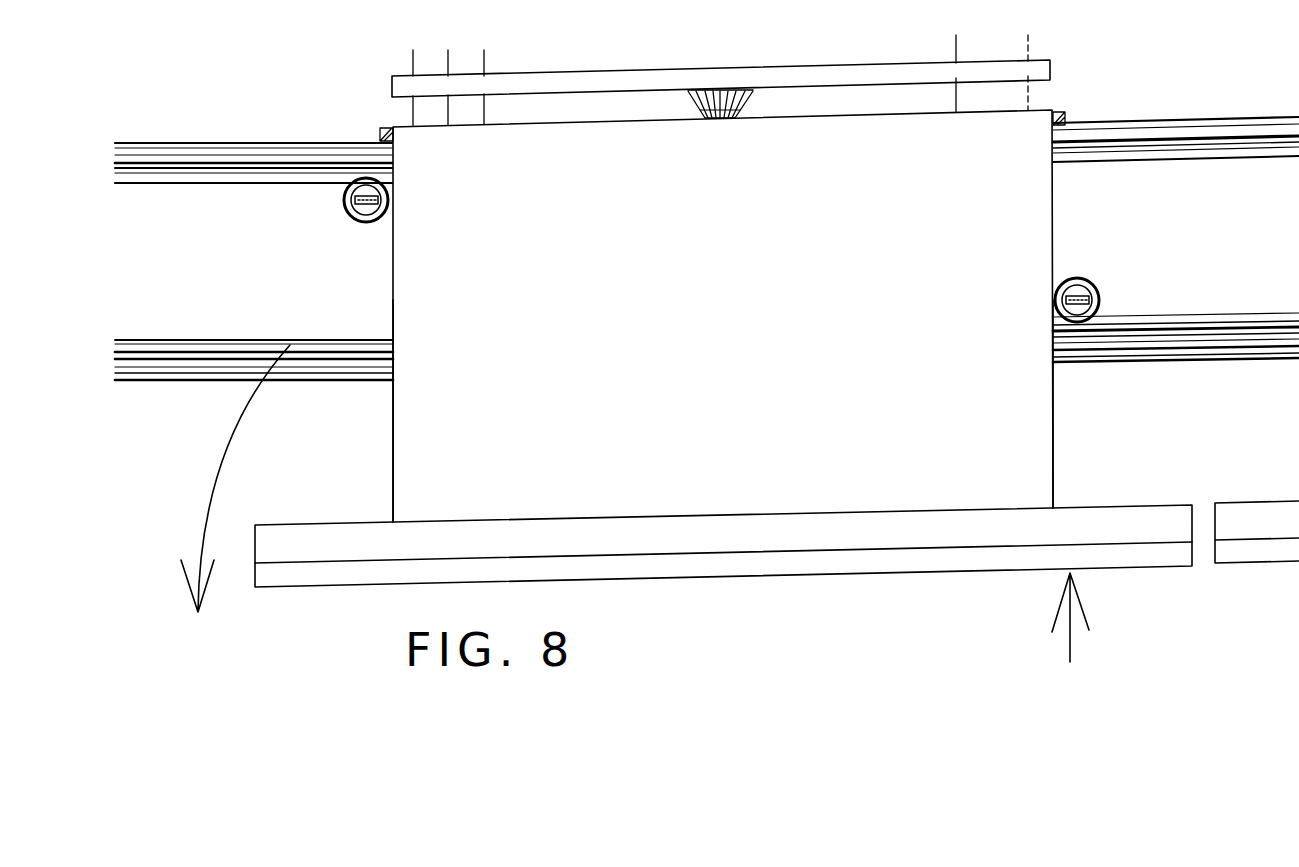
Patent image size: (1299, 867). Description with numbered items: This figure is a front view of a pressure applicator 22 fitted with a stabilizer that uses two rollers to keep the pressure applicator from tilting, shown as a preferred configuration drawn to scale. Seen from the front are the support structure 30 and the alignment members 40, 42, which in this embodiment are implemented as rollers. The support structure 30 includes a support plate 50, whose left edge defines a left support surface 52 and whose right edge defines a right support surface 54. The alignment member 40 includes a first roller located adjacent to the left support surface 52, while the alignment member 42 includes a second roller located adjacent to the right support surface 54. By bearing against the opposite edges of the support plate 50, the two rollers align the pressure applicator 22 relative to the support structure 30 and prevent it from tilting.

The pressure applicator 22 is at (297, 525).
The support structure 30 is at (1176, 437).
The alignment member 40 is at (342, 203).
The alignment member 42 is at (1102, 298).
The support plate 50 is at (1020, 467).
The left support surface 52 is at (393, 407).
The right support surface 54 is at (1058, 422).